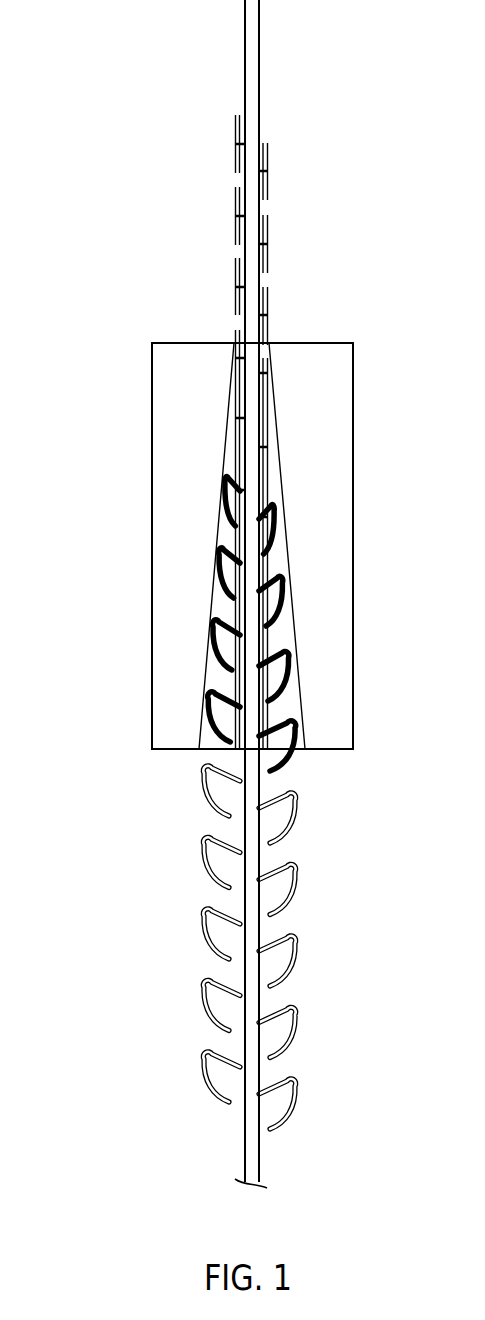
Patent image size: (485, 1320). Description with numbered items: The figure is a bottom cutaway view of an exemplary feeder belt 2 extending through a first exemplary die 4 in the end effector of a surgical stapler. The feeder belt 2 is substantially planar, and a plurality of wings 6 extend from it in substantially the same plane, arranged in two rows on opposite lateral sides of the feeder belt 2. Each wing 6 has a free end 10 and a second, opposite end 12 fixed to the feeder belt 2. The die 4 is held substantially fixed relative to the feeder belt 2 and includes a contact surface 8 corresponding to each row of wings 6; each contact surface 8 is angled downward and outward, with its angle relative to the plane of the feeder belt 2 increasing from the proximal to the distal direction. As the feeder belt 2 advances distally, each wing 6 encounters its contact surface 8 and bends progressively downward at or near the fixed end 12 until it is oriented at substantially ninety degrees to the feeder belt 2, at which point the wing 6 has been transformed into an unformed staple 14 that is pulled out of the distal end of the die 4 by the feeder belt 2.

The feeder belt 2 is at (228, 1134).
The die 4 is at (138, 470).
The wing 6 is at (303, 957).
The contact surface 8 is at (220, 606).
The free end 10 is at (210, 1030).
The second end 12 is at (235, 908).
The staple 14 is at (236, 219).